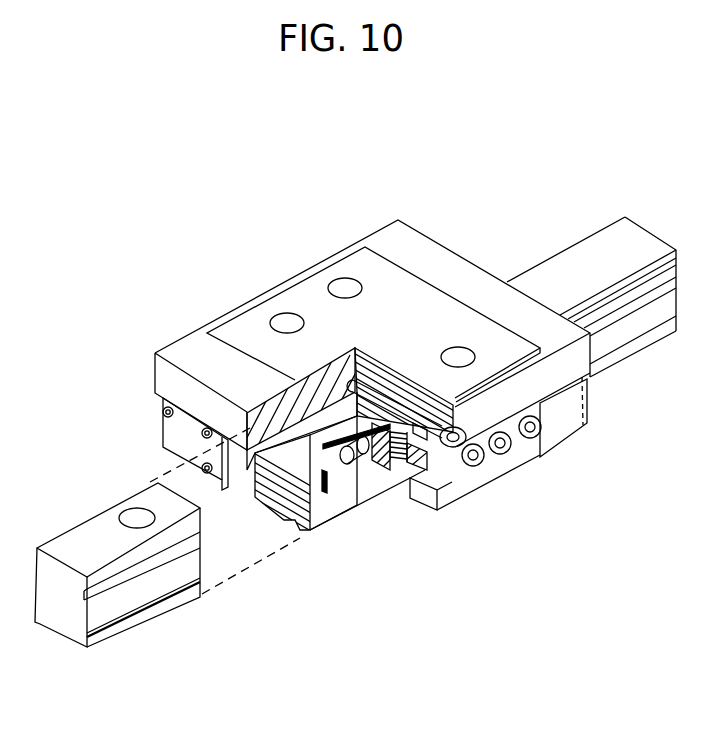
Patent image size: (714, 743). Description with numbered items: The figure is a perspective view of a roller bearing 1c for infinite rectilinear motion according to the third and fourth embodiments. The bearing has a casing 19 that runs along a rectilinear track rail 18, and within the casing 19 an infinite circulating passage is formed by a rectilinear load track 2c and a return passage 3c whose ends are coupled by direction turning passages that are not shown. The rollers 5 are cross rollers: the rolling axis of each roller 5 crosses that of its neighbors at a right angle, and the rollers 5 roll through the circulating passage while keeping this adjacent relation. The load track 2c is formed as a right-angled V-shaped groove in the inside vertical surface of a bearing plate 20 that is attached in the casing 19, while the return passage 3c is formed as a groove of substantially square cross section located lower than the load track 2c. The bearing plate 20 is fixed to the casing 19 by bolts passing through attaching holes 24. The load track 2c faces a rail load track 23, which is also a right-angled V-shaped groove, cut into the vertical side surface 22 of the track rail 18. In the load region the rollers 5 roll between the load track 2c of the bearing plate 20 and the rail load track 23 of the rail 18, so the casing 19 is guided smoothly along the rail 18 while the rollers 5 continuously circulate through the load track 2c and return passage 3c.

The roller bearing 1c is at (428, 222).
The rectilinear track rail 18 is at (82, 548).
The casing 19 is at (556, 382).
The attaching holes 24 is at (447, 498).
The rollers 5 is at (358, 484).
The rectilinear load track 2c is at (373, 484).
The bearing plate 20 is at (393, 482).
The return passage 3c is at (424, 498).
The vertical side surface 22 is at (117, 610).
The rail load track 23 is at (148, 558).